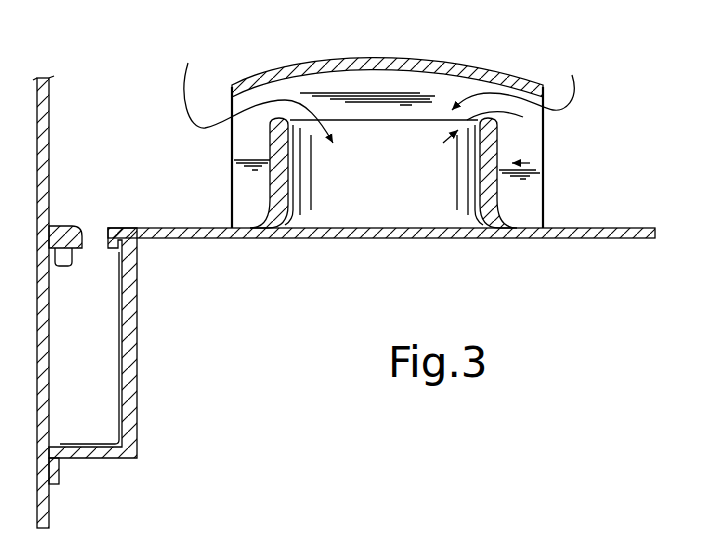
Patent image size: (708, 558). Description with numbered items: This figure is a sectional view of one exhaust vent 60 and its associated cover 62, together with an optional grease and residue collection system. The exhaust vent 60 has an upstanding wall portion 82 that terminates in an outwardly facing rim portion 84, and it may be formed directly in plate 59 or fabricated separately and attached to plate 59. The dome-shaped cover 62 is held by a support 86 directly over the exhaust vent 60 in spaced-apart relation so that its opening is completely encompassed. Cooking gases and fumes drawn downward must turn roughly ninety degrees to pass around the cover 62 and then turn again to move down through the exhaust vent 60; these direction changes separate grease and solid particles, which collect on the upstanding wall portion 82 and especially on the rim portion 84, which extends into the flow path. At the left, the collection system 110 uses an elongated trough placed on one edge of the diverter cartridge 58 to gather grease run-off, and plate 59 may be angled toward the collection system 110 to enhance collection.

The diverter cartridge 58 is at (380, 121).
The plate 59 is at (199, 226).
The exhaust vent 60 is at (431, 173).
The cover 62 is at (522, 70).
The upstanding wall portion 82 is at (488, 186).
The outwardly facing rim portion 84 is at (497, 128).
The support 86 is at (548, 200).
The collection system 110 is at (118, 355).